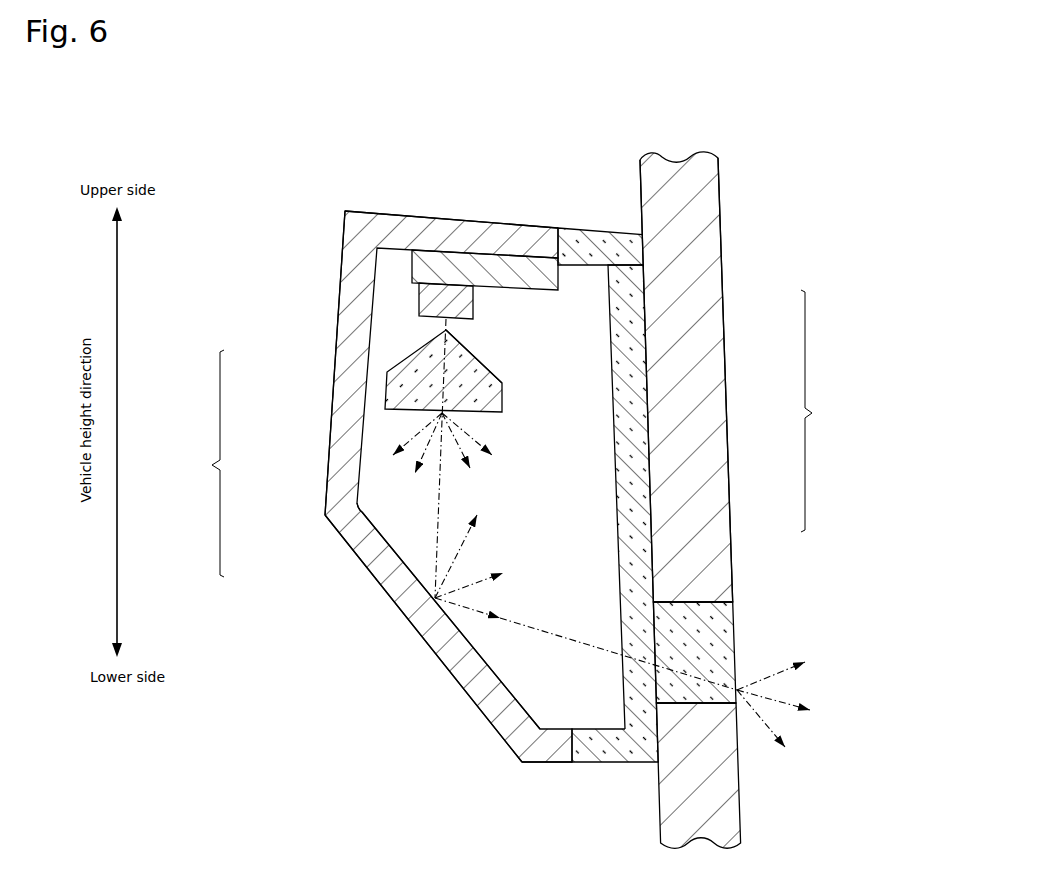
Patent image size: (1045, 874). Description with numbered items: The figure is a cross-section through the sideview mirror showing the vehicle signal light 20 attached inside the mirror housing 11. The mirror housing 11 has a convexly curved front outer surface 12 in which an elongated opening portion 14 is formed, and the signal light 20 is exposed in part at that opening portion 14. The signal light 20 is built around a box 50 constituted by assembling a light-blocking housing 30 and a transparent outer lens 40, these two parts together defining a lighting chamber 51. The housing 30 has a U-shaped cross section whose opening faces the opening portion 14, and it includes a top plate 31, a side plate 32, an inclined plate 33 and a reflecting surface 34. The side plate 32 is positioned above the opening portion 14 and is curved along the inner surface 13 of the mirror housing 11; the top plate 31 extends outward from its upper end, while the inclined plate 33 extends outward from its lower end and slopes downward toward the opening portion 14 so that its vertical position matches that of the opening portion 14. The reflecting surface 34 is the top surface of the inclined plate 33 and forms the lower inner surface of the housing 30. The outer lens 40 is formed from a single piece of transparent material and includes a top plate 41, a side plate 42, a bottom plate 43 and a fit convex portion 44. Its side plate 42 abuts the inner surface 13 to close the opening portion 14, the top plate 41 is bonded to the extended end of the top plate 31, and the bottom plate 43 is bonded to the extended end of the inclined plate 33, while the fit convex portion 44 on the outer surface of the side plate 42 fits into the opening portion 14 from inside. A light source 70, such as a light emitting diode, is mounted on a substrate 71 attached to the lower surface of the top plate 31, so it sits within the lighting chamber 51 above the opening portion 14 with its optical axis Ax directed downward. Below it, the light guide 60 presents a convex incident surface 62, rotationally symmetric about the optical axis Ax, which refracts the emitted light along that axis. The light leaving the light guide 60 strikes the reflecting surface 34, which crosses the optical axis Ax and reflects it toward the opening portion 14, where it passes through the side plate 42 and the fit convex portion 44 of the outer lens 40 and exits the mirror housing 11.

The vehicle signal light 20 is at (326, 157).
The mirror housing 11 is at (707, 187).
The front outer surface 12 is at (719, 218).
The inner surface 13 is at (640, 182).
The opening portion 14 is at (688, 620).
The housing 30 is at (378, 486).
The top plate 31 is at (395, 232).
The side plate 32 is at (338, 438).
The inclined plate 33 is at (363, 533).
The reflecting surface 34 is at (396, 541).
The outer lens 40 is at (823, 411).
The top plate 41 is at (602, 247).
The side plate 42 is at (635, 437).
The bottom plate 43 is at (593, 728).
The fit convex portion 44 is at (711, 630).
The box 50 is at (519, 765).
The lighting chamber 51 is at (497, 653).
The light guide 60 is at (485, 400).
The incident surface 62 is at (483, 363).
The light source 70 is at (452, 303).
The substrate 71 is at (503, 273).
The optical axis Ax is at (438, 502).